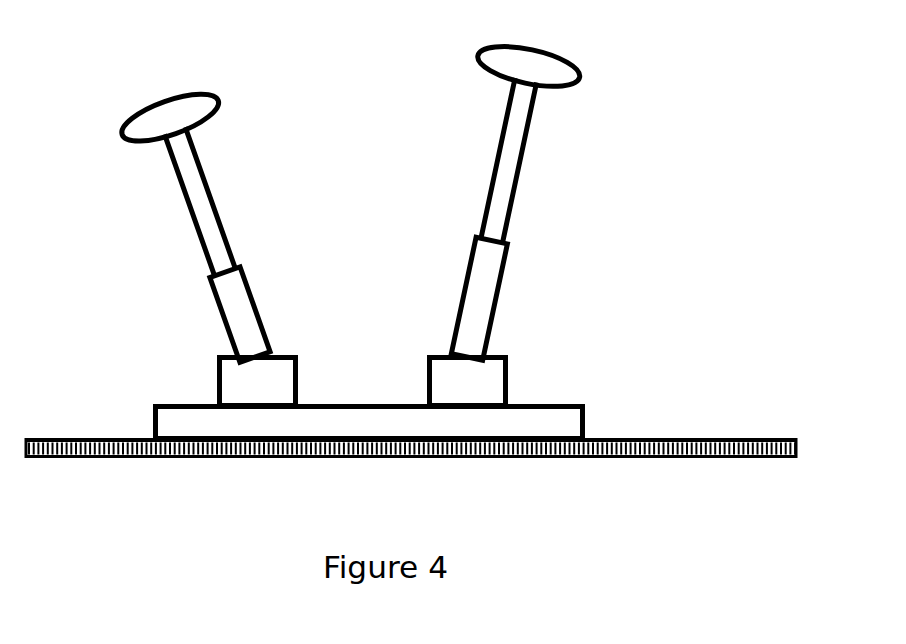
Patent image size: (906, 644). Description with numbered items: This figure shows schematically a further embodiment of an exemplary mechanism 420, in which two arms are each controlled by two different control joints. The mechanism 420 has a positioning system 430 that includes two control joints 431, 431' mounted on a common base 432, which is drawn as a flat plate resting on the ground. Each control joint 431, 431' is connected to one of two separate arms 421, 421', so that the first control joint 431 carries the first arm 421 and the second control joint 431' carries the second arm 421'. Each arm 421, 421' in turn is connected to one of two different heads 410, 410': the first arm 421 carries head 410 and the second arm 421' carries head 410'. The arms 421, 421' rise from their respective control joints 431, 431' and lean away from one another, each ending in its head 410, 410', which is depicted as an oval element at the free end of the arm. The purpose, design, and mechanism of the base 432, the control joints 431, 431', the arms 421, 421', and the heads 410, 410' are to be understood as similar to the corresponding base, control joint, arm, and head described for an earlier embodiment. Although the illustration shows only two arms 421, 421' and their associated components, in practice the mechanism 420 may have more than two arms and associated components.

The head 410 is at (226, 118).
The head 410' is at (486, 82).
The mechanism 420 is at (407, 238).
The arm 421 is at (171, 243).
The arm 421' is at (541, 218).
The positioning system 430 is at (383, 387).
The control joint 431 is at (186, 376).
The control joint 431' is at (534, 371).
The base 432 is at (152, 422).